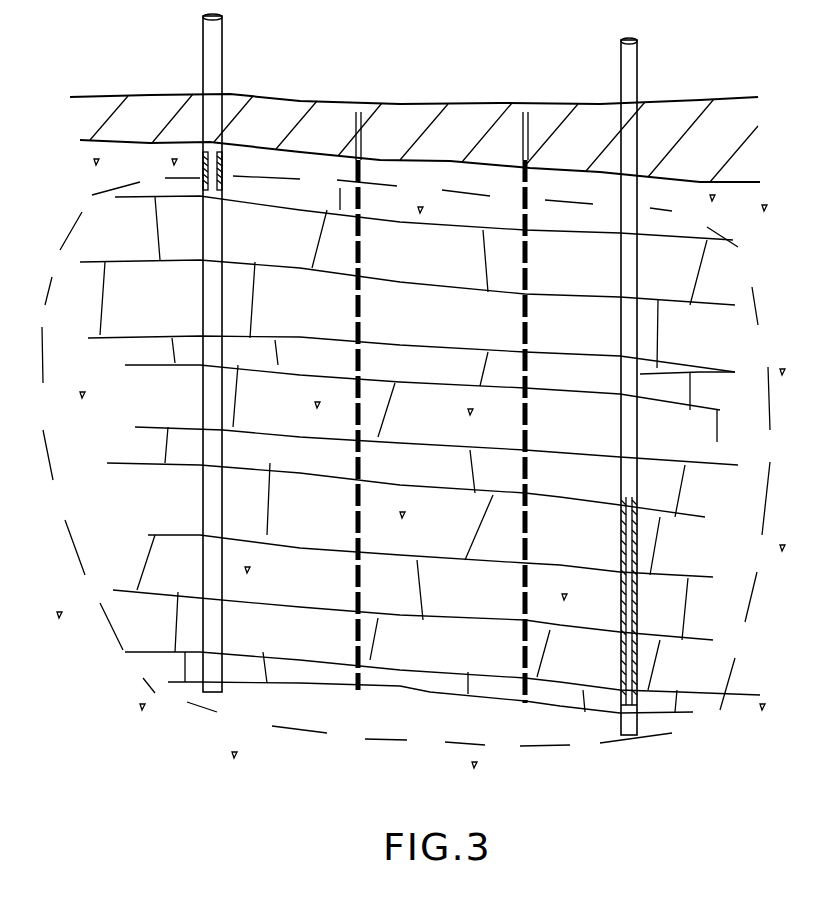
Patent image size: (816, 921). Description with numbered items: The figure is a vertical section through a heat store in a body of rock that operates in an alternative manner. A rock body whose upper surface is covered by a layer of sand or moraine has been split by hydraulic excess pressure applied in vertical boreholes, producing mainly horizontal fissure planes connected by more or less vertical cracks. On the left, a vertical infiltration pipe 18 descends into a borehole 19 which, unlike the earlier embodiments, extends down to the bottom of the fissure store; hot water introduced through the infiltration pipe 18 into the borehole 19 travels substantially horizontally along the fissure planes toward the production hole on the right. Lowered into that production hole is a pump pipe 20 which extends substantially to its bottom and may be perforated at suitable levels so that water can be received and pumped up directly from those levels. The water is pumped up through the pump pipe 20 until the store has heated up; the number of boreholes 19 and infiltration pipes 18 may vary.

The vertical infiltration pipe 18 is at (222, 68).
The borehole 19 is at (208, 498).
The pump pipe 20 is at (621, 75).